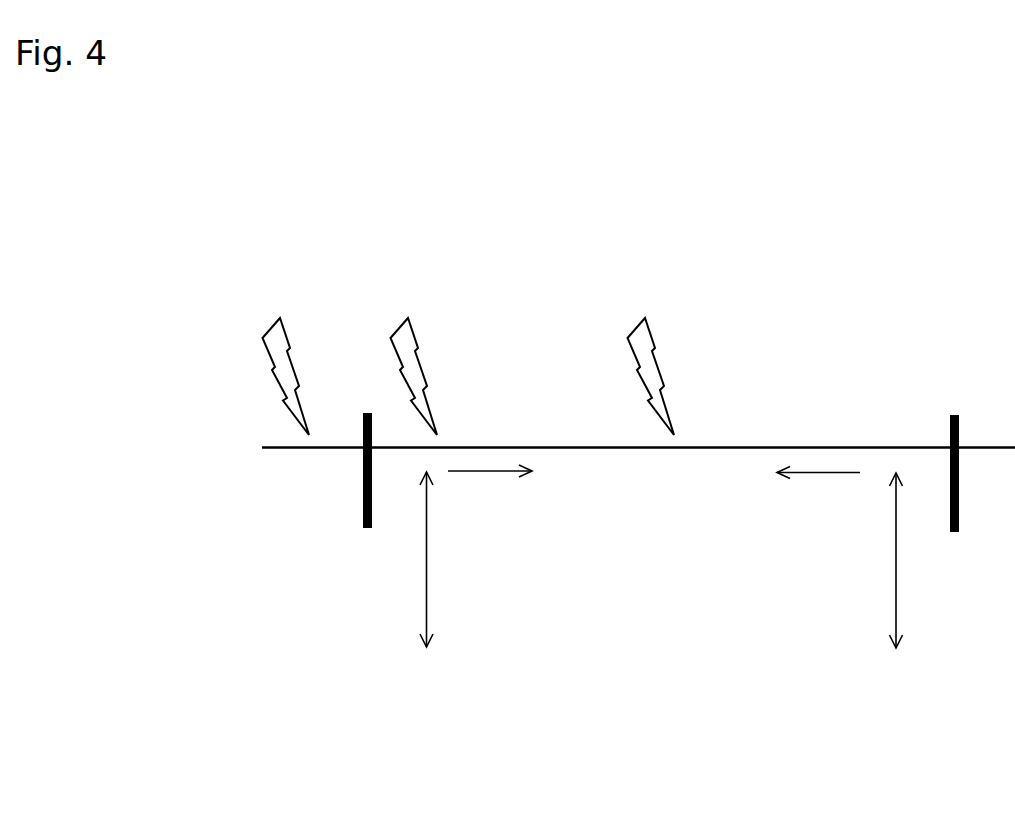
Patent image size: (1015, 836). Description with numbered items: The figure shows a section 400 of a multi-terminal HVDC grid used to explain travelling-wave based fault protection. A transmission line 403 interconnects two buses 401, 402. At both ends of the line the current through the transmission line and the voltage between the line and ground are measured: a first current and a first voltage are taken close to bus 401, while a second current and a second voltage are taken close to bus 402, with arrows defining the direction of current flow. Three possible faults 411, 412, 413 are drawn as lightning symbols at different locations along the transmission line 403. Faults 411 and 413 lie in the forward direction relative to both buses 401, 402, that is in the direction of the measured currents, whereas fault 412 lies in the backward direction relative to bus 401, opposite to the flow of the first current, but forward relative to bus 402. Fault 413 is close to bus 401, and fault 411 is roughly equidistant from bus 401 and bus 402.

The power transmission system 400 is at (227, 773).
The bus 401 is at (362, 497).
The bus 402 is at (957, 499).
The transmission line 403 is at (638, 430).
The fault 411 is at (647, 352).
The fault 412 is at (281, 353).
The fault 413 is at (410, 353).